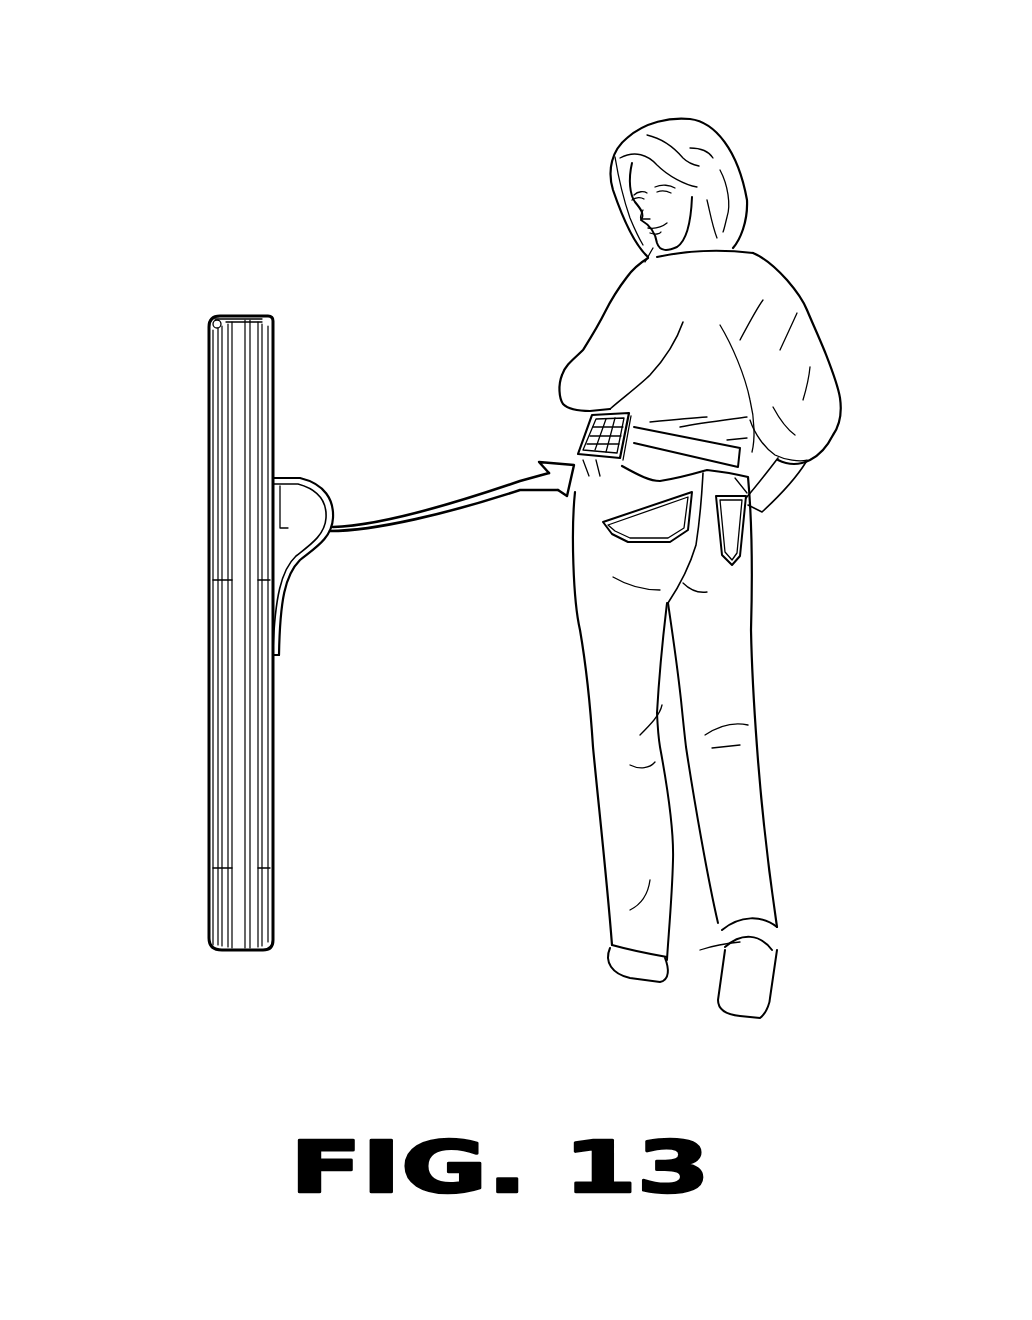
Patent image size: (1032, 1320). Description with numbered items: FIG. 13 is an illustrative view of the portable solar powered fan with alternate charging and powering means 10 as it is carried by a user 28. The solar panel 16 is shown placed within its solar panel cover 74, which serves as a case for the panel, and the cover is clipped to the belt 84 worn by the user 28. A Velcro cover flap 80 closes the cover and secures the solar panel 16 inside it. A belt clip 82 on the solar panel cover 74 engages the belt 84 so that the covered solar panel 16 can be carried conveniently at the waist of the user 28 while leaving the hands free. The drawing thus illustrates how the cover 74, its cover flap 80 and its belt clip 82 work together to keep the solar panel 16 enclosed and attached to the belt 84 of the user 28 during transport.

The portable solar powered fan with alternate charging and powering means 10 is at (828, 180).
The solar panel 16 is at (589, 430).
The user 28 is at (650, 136).
The solar panel cover 74 is at (556, 492).
The cover flap 80 is at (232, 316).
The belt clip of 74 82 is at (312, 558).
The belt 84 is at (747, 490).